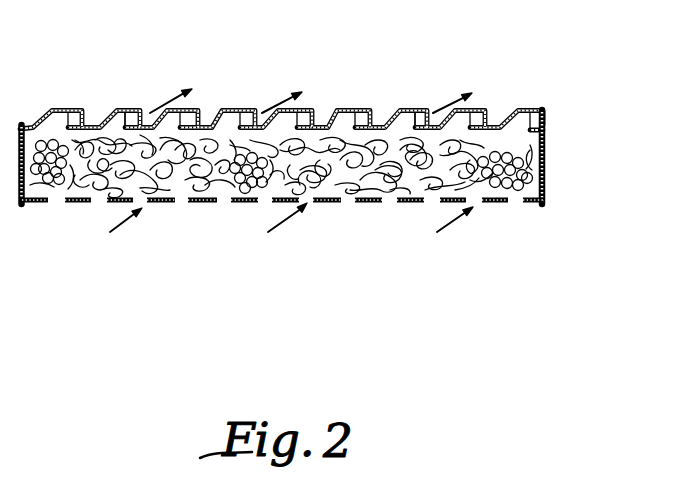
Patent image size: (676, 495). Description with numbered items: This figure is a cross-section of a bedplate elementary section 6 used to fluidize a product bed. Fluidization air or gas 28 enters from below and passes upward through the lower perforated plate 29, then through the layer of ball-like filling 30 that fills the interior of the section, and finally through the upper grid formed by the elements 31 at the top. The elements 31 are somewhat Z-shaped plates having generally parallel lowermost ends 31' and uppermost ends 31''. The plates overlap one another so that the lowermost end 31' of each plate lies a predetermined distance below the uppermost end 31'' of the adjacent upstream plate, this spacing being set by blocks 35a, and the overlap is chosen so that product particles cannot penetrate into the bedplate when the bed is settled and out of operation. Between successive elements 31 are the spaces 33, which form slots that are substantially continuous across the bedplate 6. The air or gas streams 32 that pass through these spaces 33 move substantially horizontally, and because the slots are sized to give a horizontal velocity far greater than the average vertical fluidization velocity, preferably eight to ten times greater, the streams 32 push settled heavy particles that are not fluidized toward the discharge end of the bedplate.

The bedplate elementary section 6 is at (512, 77).
The fluidization air or gas 28 is at (120, 225).
The lower perforated plate 29 is at (210, 203).
The layer of ball-like filling 30 is at (53, 183).
The elements 31 is at (295, 81).
The lowermost end 31' is at (419, 98).
The uppermost end 31'' is at (146, 83).
The air or gas streams 32 is at (165, 90).
The spaces 33 is at (387, 104).
The blocks 35a is at (362, 118).